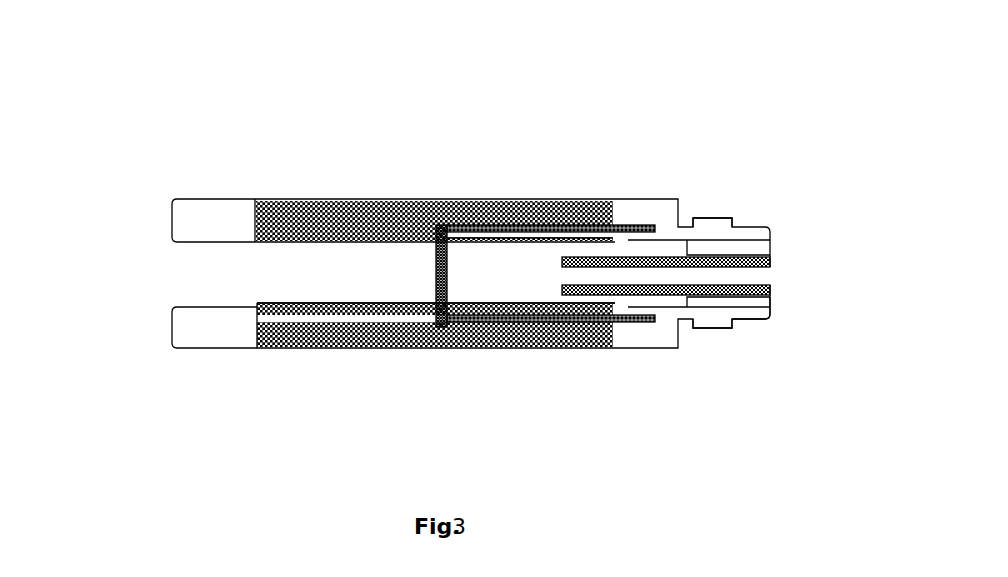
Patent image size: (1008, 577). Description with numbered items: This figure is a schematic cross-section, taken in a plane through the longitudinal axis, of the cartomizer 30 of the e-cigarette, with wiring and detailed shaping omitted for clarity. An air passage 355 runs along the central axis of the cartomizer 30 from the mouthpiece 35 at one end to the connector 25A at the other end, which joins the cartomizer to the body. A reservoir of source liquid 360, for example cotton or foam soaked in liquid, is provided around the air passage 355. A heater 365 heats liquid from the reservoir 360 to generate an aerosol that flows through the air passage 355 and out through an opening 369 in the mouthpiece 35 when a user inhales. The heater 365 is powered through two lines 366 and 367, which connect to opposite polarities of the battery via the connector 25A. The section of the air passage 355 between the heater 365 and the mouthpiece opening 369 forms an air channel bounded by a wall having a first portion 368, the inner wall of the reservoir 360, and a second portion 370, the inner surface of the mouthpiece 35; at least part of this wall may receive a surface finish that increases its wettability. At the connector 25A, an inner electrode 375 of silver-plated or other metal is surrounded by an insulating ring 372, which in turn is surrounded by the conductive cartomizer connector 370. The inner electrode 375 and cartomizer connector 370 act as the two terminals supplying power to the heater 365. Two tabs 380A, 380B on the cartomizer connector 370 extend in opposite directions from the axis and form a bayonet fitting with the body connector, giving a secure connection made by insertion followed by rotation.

The connector 25A is at (765, 330).
The cartomizer 30 is at (332, 360).
The mouthpiece 35 is at (180, 365).
The air passage 355 is at (303, 273).
The reservoir of source liquid 360 is at (349, 220).
The heater 365 is at (435, 235).
The power line 366 is at (548, 228).
The power line 367 is at (517, 322).
The first portion of air channel wall 368 is at (275, 303).
The opening in the mouthpiece 369 is at (173, 275).
The cartomizer connector 370 is at (743, 233).
The insulating ring 372 is at (756, 250).
The inner electrode 375 is at (735, 290).
The tab 380A is at (712, 225).
The tab 380B is at (713, 322).